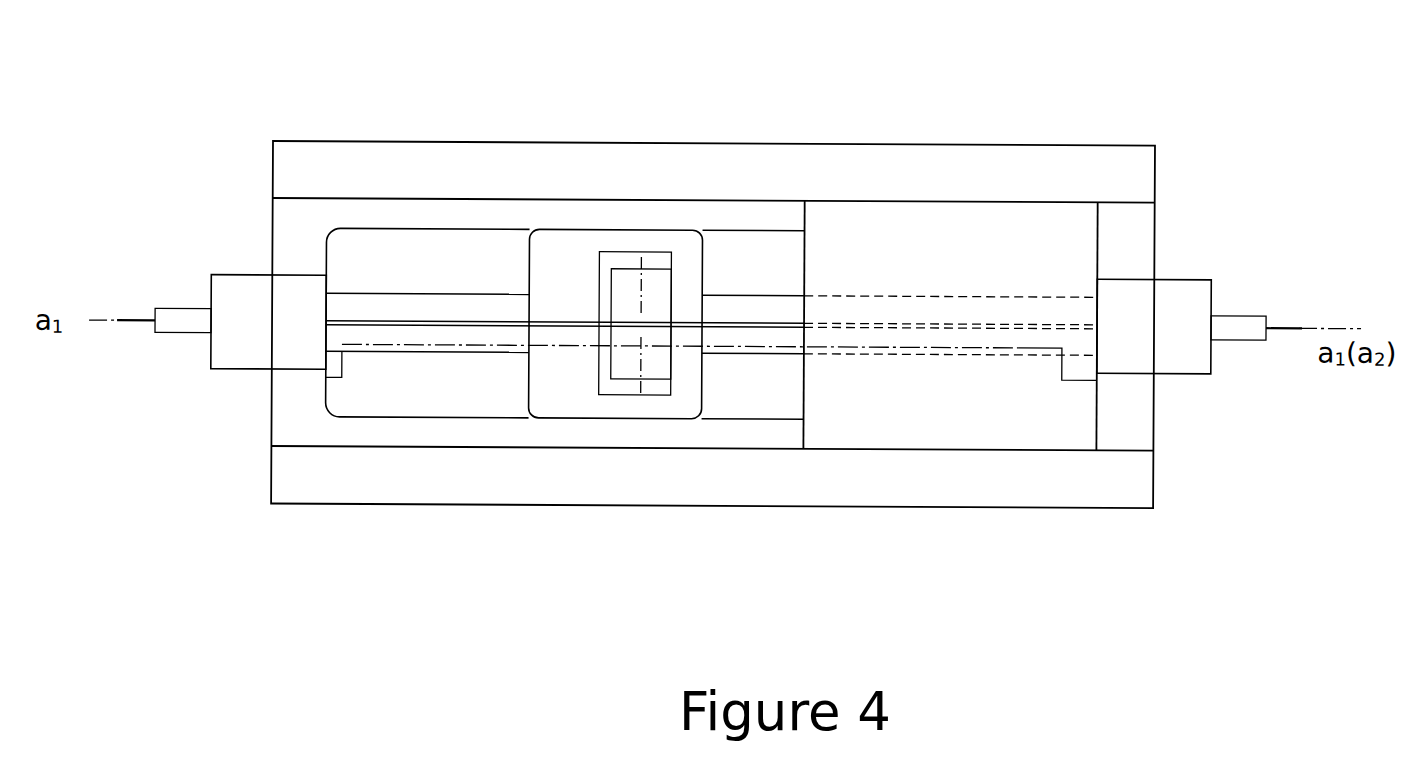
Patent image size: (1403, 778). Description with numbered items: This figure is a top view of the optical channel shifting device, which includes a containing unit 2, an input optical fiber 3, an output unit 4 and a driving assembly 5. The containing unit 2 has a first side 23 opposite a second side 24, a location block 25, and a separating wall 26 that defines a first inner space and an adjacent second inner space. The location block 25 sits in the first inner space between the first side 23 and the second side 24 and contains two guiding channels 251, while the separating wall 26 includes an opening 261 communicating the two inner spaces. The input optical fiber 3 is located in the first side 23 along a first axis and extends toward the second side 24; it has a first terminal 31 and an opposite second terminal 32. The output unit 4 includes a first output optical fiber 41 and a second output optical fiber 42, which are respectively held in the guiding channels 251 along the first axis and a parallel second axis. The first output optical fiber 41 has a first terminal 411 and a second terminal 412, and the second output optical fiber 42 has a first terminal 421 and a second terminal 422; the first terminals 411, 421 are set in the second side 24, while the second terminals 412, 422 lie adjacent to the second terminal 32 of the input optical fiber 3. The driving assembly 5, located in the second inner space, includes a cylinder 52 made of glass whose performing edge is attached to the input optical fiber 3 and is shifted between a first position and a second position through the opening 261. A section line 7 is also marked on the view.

The containing unit 2 is at (322, 132).
The first side 23 is at (278, 179).
The second side 24 is at (1133, 238).
The location block 25 is at (870, 430).
The guiding channels 251 is at (977, 352).
The separating wall 26 is at (565, 243).
The opening 261 is at (615, 256).
The input optical fiber 3 is at (236, 265).
The first terminal 31 is at (345, 321).
The second terminal 32 is at (773, 320).
The output unit 4 is at (1188, 270).
The first output optical fiber 41 is at (1299, 284).
The second output optical fiber 42 is at (1282, 318).
The first terminal 411 is at (986, 193).
The first terminal 421 is at (1045, 319).
The second terminal 412 is at (951, 206).
The second terminal 422 is at (818, 321).
The driving assembly 5 is at (330, 374).
The section line VII-VII 7 is at (642, 260).
The cylinder 52 is at (624, 371).